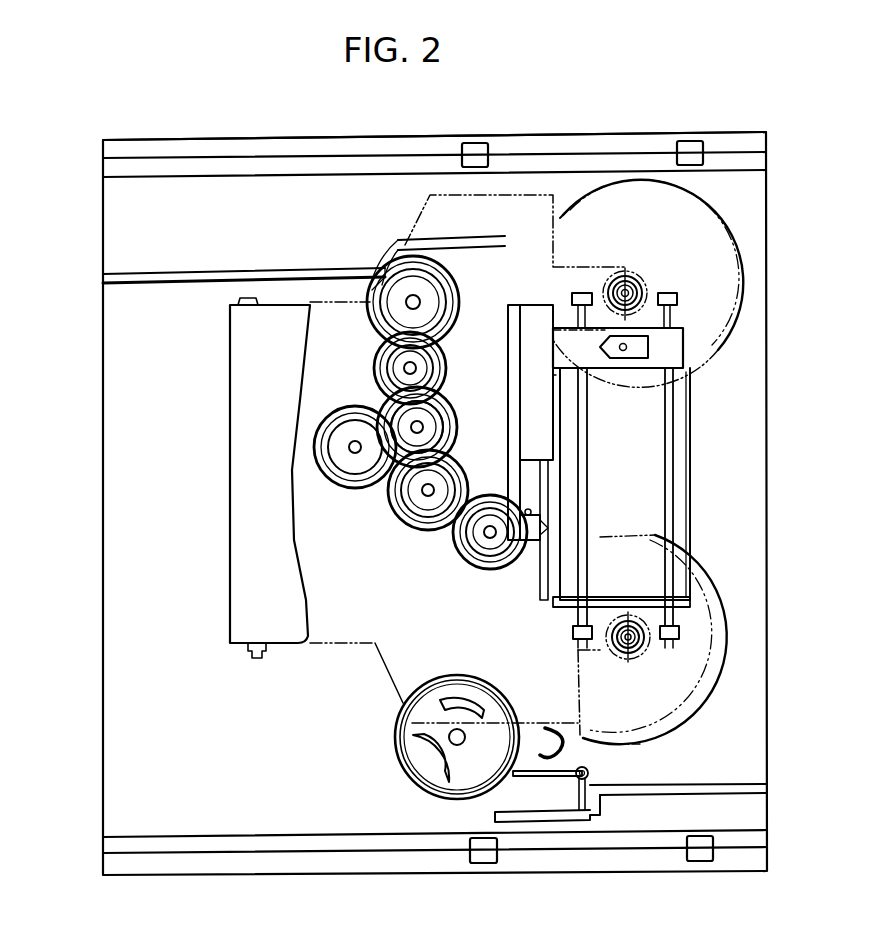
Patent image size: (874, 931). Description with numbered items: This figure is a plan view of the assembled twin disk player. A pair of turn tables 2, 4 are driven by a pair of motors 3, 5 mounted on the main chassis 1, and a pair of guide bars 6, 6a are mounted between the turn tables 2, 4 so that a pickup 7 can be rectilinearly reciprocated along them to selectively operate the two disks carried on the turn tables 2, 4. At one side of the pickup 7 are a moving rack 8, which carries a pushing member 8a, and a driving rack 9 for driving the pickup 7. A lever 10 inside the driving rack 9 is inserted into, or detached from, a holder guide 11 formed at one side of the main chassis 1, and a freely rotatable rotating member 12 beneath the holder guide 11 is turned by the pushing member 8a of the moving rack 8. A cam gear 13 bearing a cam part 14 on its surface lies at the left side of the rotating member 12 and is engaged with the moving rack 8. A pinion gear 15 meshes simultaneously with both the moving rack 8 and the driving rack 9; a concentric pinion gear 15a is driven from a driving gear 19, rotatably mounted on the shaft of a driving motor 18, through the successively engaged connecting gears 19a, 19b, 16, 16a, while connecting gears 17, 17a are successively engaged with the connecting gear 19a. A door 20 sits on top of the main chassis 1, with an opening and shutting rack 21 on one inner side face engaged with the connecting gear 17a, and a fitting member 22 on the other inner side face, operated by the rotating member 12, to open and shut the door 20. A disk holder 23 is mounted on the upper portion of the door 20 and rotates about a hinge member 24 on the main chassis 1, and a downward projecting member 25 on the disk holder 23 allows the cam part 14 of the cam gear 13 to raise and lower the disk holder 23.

The main chassis 1 is at (597, 142).
The turn table 2 is at (650, 283).
The motor 3 is at (633, 268).
The turn table 4 is at (648, 652).
The motor 5 is at (641, 665).
The guide bar 6 is at (672, 503).
The guide bar 6a is at (588, 420).
The pickup 7 is at (663, 342).
The moving rack 8 is at (508, 330).
The pushing member 8a is at (525, 545).
The driving rack 9 is at (533, 318).
The lever 10 is at (546, 520).
The holder guide 11 is at (567, 750).
The rotating member 12 is at (577, 796).
The cam gear 13 is at (447, 780).
The cam part 14 is at (420, 757).
The pinion gear 15 is at (490, 550).
The pinion gear 15a is at (470, 538).
The connecting gear 16 is at (395, 492).
The connecting gear 16a is at (412, 518).
The connecting gear 17 is at (382, 370).
The connecting gear 17a is at (378, 316).
The driving motor 18 is at (352, 460).
The driving gear 19 is at (340, 432).
The connecting gear 19a is at (448, 430).
The connecting gear 19b is at (436, 412).
The door 20 is at (765, 760).
The opening and shutting rack 21 is at (275, 268).
The fitting member 22 is at (598, 818).
The disk holder 23 is at (242, 372).
The hinge member 24 is at (252, 660).
The projecting member 25 is at (435, 702).